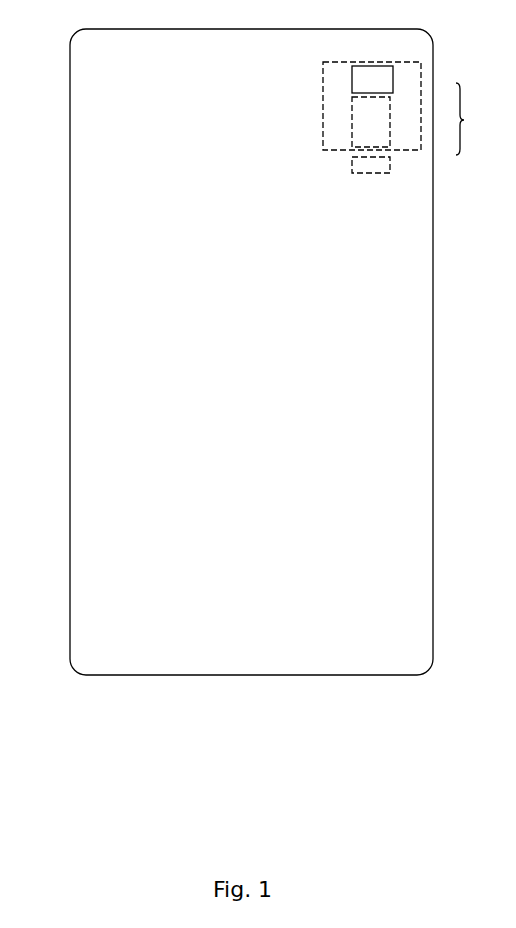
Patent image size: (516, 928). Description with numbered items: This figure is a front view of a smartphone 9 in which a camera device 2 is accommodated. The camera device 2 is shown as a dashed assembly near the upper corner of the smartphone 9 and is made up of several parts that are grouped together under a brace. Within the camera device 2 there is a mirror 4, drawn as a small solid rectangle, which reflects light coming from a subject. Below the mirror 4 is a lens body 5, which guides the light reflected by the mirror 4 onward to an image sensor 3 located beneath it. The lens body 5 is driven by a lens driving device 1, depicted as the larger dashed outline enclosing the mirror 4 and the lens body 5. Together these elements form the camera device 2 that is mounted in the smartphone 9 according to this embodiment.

The smartphone 9 is at (70, 458).
The lens driving device 1 is at (421, 100).
The camera device 2 is at (465, 119).
The image sensor 3 is at (390, 165).
The mirror 4 is at (393, 80).
The lens body 5 is at (383, 120).